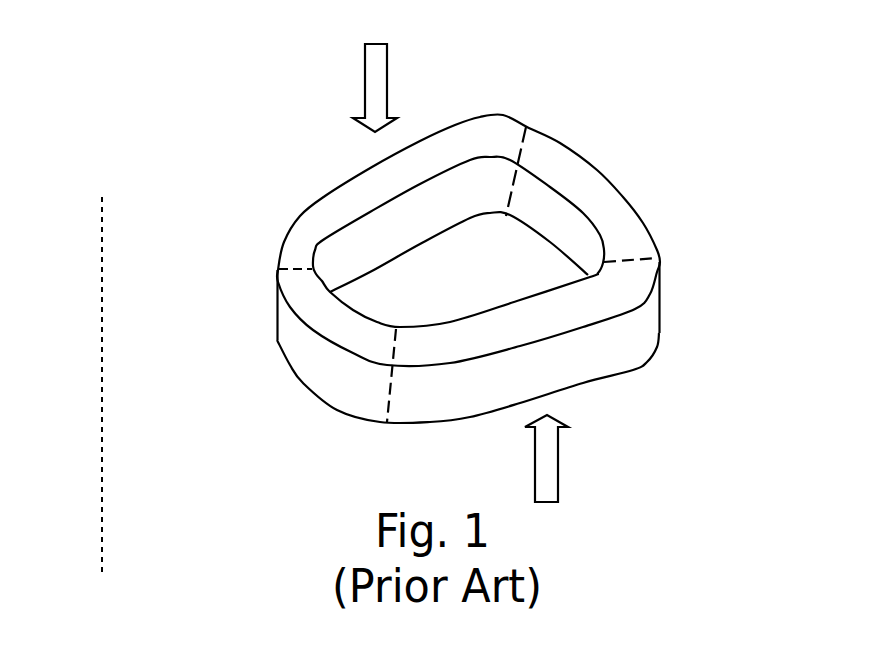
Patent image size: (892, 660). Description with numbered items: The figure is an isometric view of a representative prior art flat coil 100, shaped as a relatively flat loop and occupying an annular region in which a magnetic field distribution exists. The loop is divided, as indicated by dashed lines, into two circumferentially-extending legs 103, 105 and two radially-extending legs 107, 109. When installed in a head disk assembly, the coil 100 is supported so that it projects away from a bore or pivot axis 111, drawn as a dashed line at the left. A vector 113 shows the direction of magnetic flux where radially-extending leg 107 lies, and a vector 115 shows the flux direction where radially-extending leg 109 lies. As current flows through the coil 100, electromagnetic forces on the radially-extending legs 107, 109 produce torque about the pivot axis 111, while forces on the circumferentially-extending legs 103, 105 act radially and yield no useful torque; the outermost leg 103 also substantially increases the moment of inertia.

The flat coil 100 is at (470, 240).
The circumferentially-extending leg 103 is at (587, 188).
The circumferentially-extending leg 105 is at (315, 317).
The radially-extending leg 107 is at (470, 137).
The radially-extending leg 109 is at (597, 343).
The pivot axis 111 is at (103, 372).
The vector 113 is at (388, 78).
The vector 115 is at (558, 468).